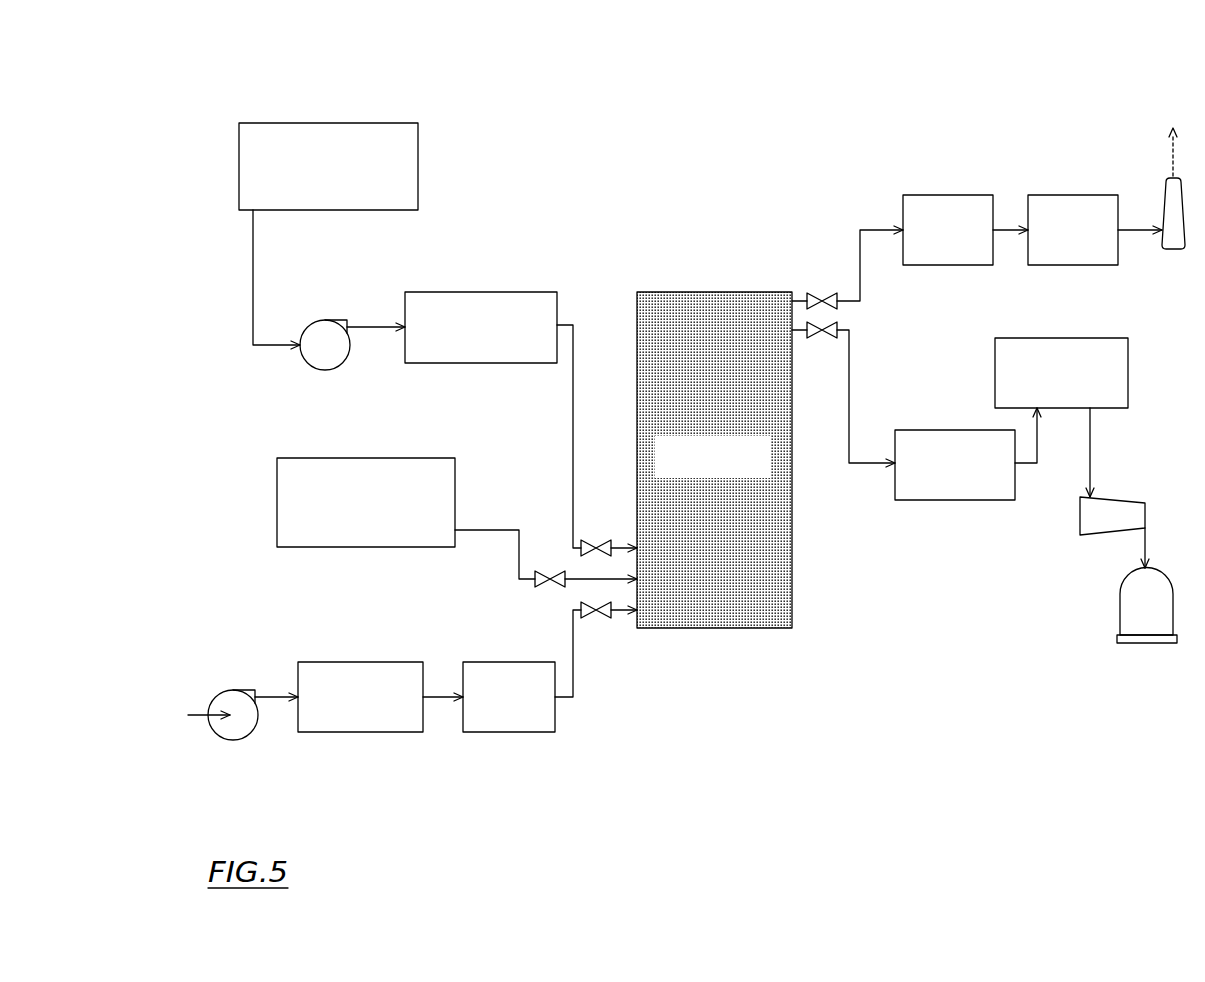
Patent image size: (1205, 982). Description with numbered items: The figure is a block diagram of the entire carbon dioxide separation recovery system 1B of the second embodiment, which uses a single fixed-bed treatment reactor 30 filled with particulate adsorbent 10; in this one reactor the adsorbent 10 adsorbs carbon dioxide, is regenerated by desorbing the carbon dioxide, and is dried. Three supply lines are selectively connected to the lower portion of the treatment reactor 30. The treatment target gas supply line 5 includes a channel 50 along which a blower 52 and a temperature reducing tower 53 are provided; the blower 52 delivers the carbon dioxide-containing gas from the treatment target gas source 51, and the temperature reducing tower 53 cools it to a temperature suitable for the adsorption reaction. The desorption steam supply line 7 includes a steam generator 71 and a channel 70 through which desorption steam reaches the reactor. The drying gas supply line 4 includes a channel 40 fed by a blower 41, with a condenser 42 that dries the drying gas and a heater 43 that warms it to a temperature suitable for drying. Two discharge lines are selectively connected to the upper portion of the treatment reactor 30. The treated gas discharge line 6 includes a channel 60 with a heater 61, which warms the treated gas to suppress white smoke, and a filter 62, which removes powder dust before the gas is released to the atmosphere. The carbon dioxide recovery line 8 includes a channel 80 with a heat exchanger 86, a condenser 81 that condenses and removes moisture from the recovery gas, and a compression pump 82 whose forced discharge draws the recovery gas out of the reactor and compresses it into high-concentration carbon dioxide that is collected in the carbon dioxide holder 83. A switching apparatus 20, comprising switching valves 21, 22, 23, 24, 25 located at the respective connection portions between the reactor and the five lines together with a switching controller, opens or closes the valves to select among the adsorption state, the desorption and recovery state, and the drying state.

The carbon dioxide separation recovery system 1B is at (747, 152).
The drying gas supply line 4 is at (438, 763).
The treatment target gas supply line 5 is at (530, 232).
The treated gas discharge line 6 is at (1015, 178).
The desorption steam supply line 7 is at (484, 553).
The carbon dioxide recovery line 8 is at (977, 407).
The adsorbent 10 is at (688, 317).
The switching apparatus 20 is at (622, 727).
The switching valve 21 is at (586, 538).
The switching valve 22 is at (818, 292).
The switching valve 23 is at (548, 571).
The switching valve 24 is at (817, 340).
The switching valve 25 is at (610, 618).
The treatment reactor 30 is at (792, 537).
The channel 40 is at (575, 700).
The blower 41 is at (233, 740).
The condenser 42 is at (380, 732).
The heater 43 is at (495, 732).
The channel 50 is at (573, 318).
The treatment target gas source 51 is at (336, 123).
The blower 52 is at (340, 322).
The temperature reducing tower 53 is at (520, 292).
The channel 60 is at (868, 225).
The heater 61 is at (930, 195).
The filter 62 is at (1074, 195).
The channel 70 is at (485, 530).
The steam generator 71 is at (370, 547).
The channel 80 is at (850, 355).
The condenser 81 is at (1067, 338).
The compression pump 82 is at (1120, 500).
The carbon dioxide holder 83 is at (1120, 598).
The heat exchanger 86 is at (975, 500).